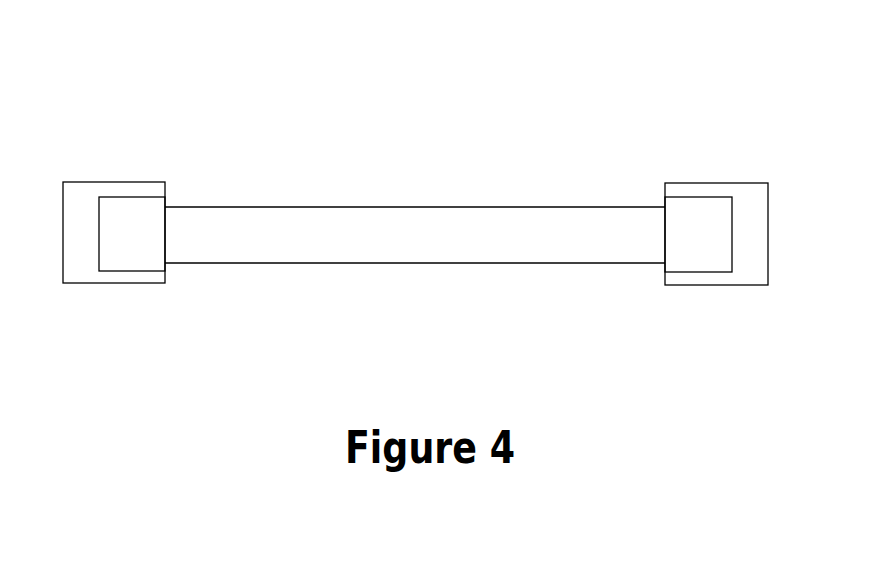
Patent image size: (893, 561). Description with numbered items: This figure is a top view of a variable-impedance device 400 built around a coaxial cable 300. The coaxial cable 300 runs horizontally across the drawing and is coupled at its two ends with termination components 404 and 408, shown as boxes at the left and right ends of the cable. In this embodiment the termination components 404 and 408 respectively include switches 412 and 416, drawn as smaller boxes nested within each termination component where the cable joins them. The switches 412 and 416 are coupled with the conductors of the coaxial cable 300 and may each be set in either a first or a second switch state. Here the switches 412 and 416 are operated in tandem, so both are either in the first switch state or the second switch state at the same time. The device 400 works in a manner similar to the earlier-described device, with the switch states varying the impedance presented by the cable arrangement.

The device 400 is at (96, 68).
The termination component 404 is at (115, 180).
The termination component 408 is at (710, 180).
The switch 412 is at (132, 234).
The switch 416 is at (698, 234).
The coaxial cable 300 is at (397, 205).